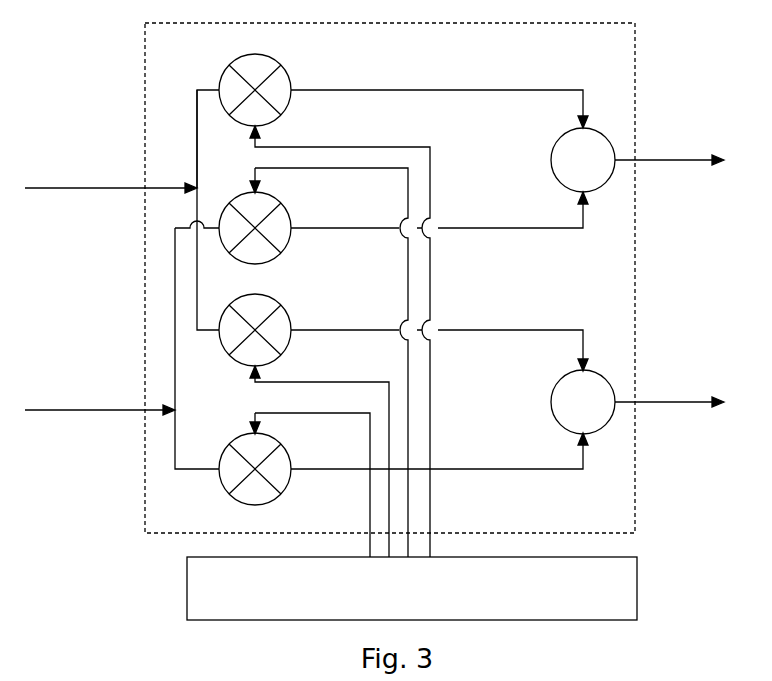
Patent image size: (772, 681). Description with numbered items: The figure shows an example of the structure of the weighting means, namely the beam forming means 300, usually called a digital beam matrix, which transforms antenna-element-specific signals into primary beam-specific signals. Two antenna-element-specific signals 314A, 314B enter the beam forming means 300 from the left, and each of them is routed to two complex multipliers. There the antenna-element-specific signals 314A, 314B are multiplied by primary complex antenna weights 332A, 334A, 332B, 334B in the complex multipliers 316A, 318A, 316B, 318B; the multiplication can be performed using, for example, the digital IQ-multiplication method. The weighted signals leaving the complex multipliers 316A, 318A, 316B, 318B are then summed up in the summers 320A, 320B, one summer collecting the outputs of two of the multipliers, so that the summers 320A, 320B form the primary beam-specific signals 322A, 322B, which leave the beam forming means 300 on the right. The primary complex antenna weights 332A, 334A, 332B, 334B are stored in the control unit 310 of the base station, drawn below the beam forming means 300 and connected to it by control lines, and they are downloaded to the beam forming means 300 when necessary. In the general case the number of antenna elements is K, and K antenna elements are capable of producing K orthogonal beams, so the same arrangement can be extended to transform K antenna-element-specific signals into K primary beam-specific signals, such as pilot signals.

The beam forming means 300 is at (145, 66).
The control unit 310 is at (187, 612).
The antenna-element-specific signal 314A is at (88, 188).
The antenna-element-specific signal 314B is at (88, 410).
The complex multiplier 316A is at (284, 73).
The complex multiplier 316B is at (285, 313).
The complex multiplier 318A is at (284, 252).
The complex multiplier 318B is at (284, 493).
The summer 320A is at (551, 160).
The summer 320B is at (551, 402).
The primary beam-specific signal 322A is at (682, 160).
The primary beam-specific signal 322B is at (682, 402).
The primary complex antenna weight 332A is at (299, 147).
The primary complex antenna weight 332B is at (292, 382).
The primary complex antenna weight 334A is at (294, 170).
The primary complex antenna weight 334B is at (280, 415).